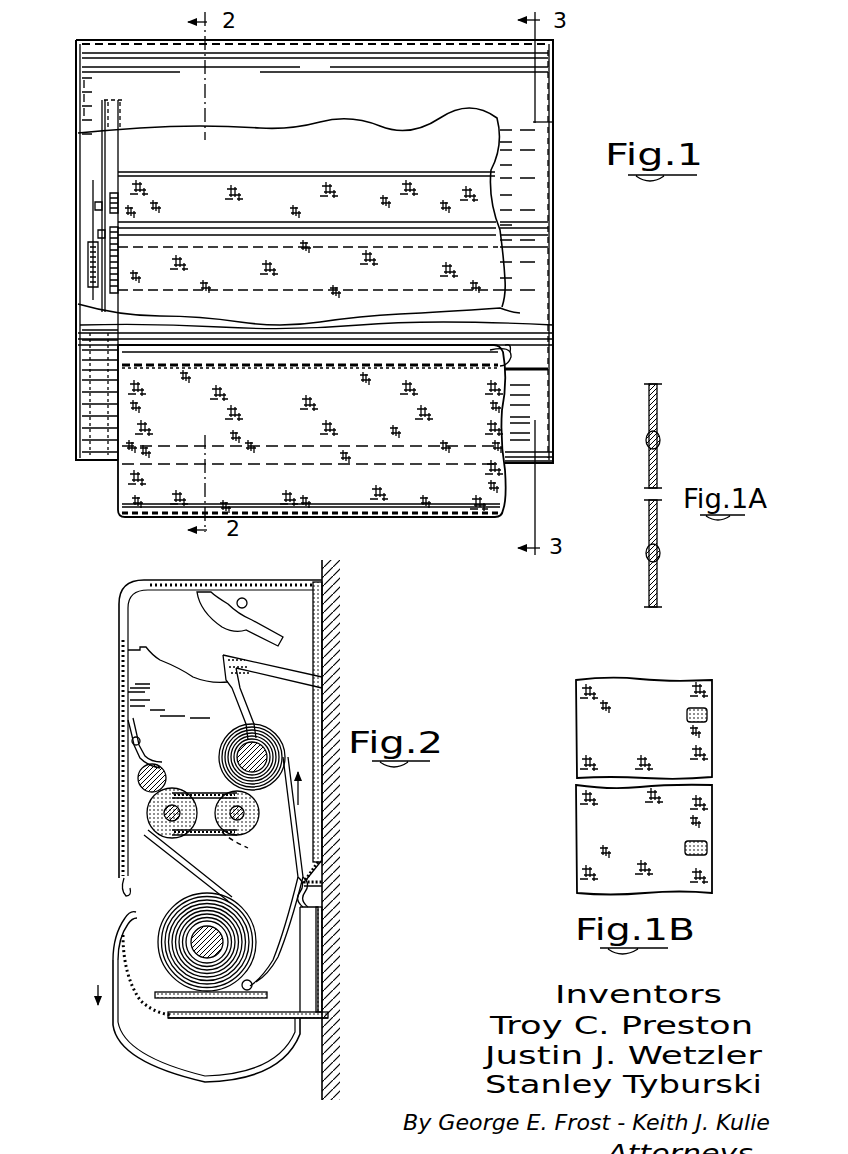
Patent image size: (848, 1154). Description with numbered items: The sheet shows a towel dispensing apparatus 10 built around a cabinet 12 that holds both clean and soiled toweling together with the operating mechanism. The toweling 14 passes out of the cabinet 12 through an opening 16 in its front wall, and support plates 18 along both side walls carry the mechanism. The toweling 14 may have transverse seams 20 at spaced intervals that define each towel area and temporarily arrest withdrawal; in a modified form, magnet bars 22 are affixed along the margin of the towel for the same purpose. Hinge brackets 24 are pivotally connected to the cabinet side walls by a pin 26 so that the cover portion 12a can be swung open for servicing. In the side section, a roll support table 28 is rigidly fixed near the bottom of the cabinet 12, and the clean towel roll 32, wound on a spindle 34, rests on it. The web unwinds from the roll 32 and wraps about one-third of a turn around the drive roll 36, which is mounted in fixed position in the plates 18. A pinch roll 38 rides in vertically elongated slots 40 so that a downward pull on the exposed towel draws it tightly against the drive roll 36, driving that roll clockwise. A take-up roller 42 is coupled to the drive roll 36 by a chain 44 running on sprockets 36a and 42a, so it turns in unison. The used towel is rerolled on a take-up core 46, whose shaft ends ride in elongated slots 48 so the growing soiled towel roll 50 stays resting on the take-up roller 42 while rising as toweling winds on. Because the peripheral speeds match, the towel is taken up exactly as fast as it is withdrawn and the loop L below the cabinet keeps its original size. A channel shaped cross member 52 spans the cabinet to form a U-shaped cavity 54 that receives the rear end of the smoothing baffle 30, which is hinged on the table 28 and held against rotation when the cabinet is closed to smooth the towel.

In FIG. 1, the towel dispensing apparatus 10 is at (560, 262).
In FIG. 1, the cabinet 12 is at (545, 300).
In FIG. 2, the cabinet 12 is at (119, 806).
In FIG. 1, the cover portion 12a is at (428, 95).
In FIG. 2, the cover portion 12a is at (119, 617).
In FIG. 1, the toweling 14 is at (409, 485).
In FIG. 1A, the toweling 14 is at (657, 400).
In FIG. 1B, the toweling 14 is at (634, 727).
In FIG. 2, the toweling 14 is at (110, 1020).
In FIG. 1, the opening 16 is at (498, 347).
In FIG. 2, the opening 16 is at (122, 898).
In FIG. 1, the support plates 18 is at (108, 150).
In FIG. 1, the seams 20 is at (312, 364).
In FIG. 1A, the seams 20 is at (661, 444).
In FIG. 1B, the magnet bars 22 is at (712, 712).
In FIG. 2, the hinge brackets 24 is at (210, 620).
In FIG. 2, the pin 26 is at (247, 600).
In FIG. 2, the roll support table 28 is at (180, 998).
In FIG. 2, the smoothing baffle 30 is at (283, 957).
In FIG. 2, the clean towel roll 32 is at (173, 956).
In FIG. 2, the spindle 34 is at (212, 958).
In FIG. 2, the drive roll 36 is at (188, 842).
In FIG. 2, the sprocket 36a is at (195, 838).
In FIG. 2, the pinch roll 38 is at (140, 772).
In FIG. 2, the vertically elongated slots 40 is at (128, 718).
In FIG. 2, the take-up roller 42 is at (253, 816).
In FIG. 2, the sprocket 42a is at (237, 850).
In FIG. 2, the chain 44 is at (198, 795).
In FIG. 2, the take-up core 46 is at (258, 748).
In FIG. 2, the elongated slots 48 is at (246, 690).
In FIG. 2, the soiled towel roll 50 is at (278, 752).
In FIG. 2, the channel shaped cross member 52 is at (322, 885).
In FIG. 2, the U-shaped cavity 54 is at (332, 900).
In FIG. 2, the loop L is at (180, 1080).